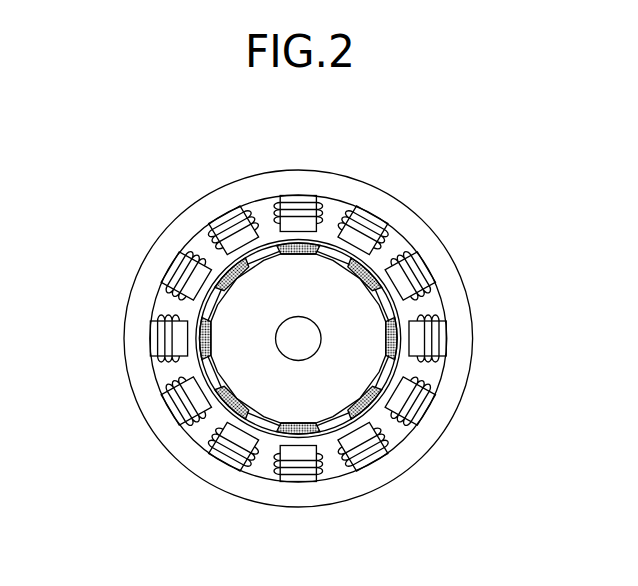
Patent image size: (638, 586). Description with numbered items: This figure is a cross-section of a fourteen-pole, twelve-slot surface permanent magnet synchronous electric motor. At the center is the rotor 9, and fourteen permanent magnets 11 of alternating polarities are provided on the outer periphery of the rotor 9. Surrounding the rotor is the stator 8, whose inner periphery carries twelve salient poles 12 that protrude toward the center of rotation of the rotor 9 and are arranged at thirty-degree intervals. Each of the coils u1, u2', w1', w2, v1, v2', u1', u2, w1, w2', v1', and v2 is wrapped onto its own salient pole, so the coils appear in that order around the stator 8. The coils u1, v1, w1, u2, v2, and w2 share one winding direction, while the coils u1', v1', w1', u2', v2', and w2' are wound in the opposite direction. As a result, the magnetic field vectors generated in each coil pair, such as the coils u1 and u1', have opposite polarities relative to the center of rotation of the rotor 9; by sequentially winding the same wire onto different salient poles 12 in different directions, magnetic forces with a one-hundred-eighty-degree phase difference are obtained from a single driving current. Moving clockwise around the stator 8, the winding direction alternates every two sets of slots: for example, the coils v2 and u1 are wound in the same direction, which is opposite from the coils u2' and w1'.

The stator 8 is at (421, 235).
The rotor 9 is at (301, 393).
The permanent magnets 11 is at (387, 307).
The salient poles 12 is at (234, 278).
The coil u1 is at (298, 180).
The coil u1' is at (298, 497).
The coil u2 is at (214, 473).
The coil u2' is at (375, 204).
The coil v1 is at (440, 408).
The coil v1' is at (165, 270).
The coil v2 is at (215, 215).
The coil v2' is at (370, 472).
The coil w1 is at (141, 408).
The coil w1' is at (443, 269).
The coil w2 is at (477, 338).
The coil w2' is at (122, 338).